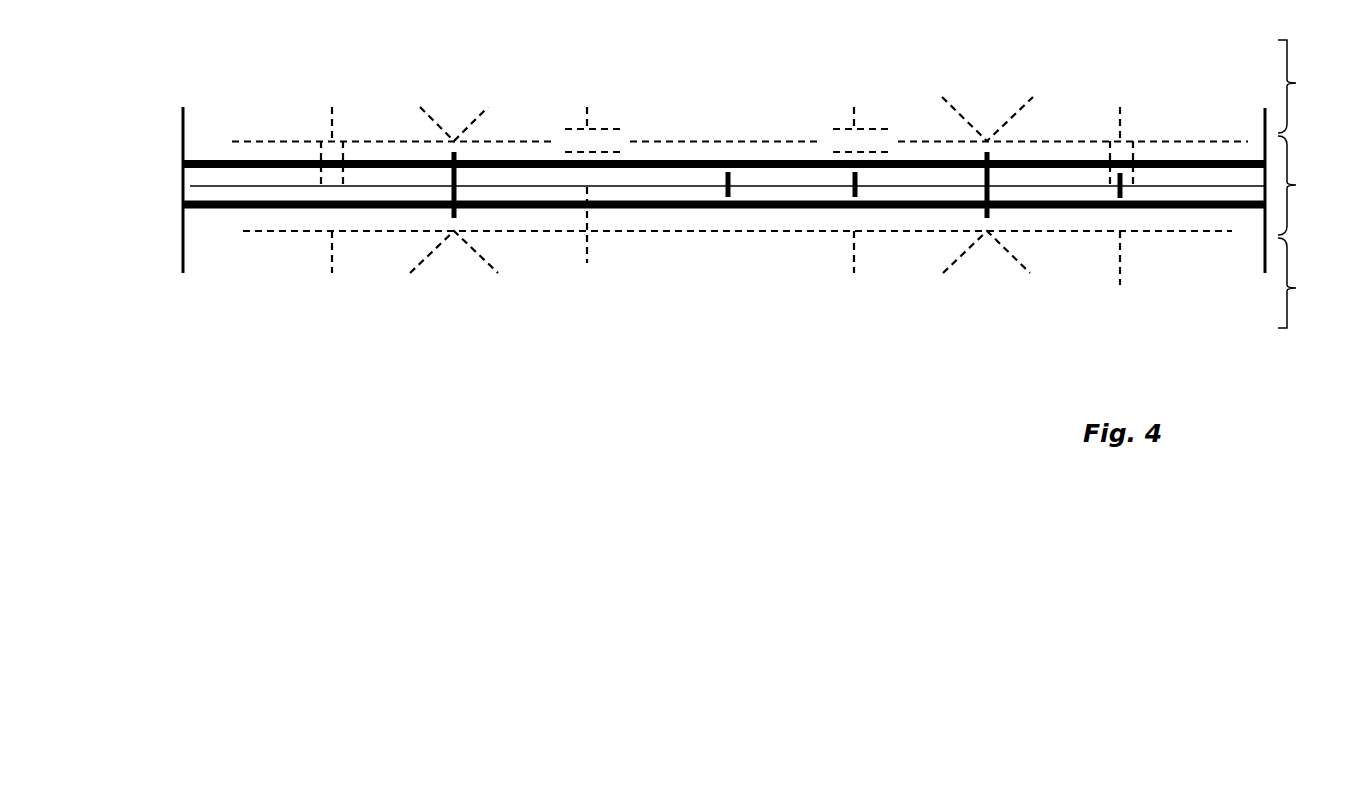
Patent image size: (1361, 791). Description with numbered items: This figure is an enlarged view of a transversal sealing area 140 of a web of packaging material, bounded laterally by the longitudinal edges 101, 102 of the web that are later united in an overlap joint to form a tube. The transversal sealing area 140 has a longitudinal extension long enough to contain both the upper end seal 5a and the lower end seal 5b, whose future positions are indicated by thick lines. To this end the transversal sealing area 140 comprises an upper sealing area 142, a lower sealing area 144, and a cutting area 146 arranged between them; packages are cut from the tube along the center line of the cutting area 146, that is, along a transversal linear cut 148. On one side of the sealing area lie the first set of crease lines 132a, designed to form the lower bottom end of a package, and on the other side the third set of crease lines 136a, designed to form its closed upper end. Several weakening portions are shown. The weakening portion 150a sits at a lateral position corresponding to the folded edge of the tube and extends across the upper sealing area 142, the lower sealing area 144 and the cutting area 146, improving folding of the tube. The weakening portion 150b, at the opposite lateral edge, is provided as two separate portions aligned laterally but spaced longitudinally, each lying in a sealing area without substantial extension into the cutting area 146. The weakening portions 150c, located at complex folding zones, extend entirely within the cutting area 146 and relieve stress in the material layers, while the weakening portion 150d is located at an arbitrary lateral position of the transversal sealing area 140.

The longitudinal edge 101 is at (185, 123).
The longitudinal edge 102 is at (1267, 122).
The lower sealing area 144 is at (178, 141).
The cutting area 146 is at (178, 168).
The upper sealing area 142 is at (178, 205).
The transversal linear cut 148 is at (677, 185).
The transversal sealing area 140 is at (1307, 185).
The first set of crease lines 132a is at (1313, 86).
The third set of crease lines 136a is at (1313, 283).
The upper end seal 5a is at (395, 160).
The lower end seal 5b is at (558, 210).
The weakening portion 150a is at (455, 183).
The weakening portion 150b is at (987, 157).
The weakening portion 150c is at (855, 183).
The weakening portion 150d is at (728, 190).